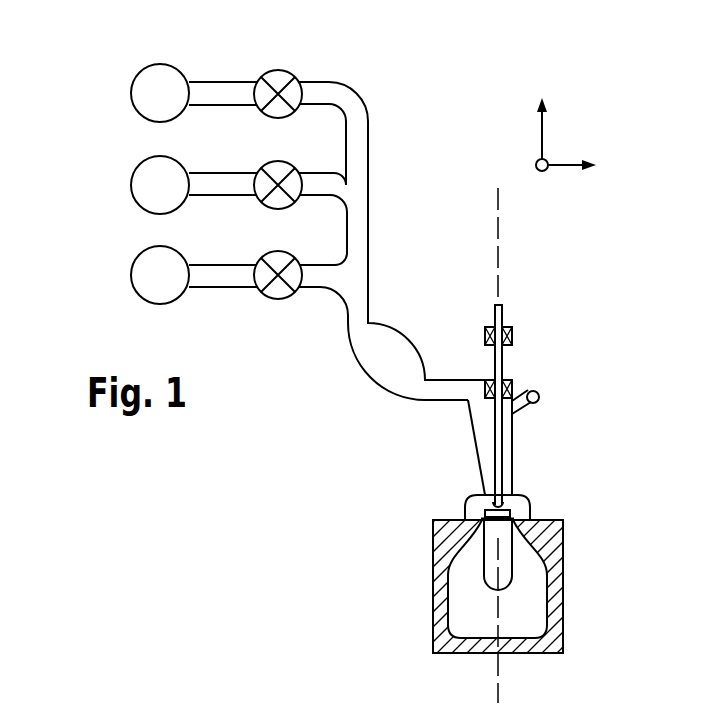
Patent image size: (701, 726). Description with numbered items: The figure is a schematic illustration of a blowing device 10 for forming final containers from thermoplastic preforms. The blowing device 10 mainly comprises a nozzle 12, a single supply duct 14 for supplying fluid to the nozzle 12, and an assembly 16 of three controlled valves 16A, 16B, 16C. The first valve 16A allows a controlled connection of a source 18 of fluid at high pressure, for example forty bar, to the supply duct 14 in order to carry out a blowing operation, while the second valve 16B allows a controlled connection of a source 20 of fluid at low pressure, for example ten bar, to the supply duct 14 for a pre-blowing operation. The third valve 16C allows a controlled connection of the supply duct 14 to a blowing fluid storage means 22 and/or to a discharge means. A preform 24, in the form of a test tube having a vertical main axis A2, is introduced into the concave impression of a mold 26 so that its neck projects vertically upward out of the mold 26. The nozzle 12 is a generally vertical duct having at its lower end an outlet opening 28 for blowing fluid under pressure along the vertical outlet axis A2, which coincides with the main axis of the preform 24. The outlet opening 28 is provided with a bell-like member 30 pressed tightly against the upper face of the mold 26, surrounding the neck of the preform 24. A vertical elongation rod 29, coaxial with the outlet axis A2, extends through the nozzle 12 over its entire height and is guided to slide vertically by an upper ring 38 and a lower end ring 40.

The blowing device 10 is at (490, 117).
The nozzle 12 is at (455, 444).
The supply duct 14 is at (378, 364).
The assembly of controlled valves 16 is at (284, 43).
The first valve 16A is at (276, 79).
The second valve 16B is at (279, 162).
The third valve 16C is at (277, 296).
The source of fluid at high pressure 18 is at (153, 90).
The source of fluid at low pressure 20 is at (150, 173).
The blowing fluid storage means 22 is at (157, 270).
The preform 24 is at (492, 578).
The mold 26 is at (550, 651).
The outlet opening 28 is at (500, 502).
The elongation rod 29 is at (498, 462).
The bell-like member 30 is at (467, 500).
The upper ring 38 is at (512, 337).
The lower end ring 40 is at (513, 388).
The vertical outlet axis A2 is at (497, 207).